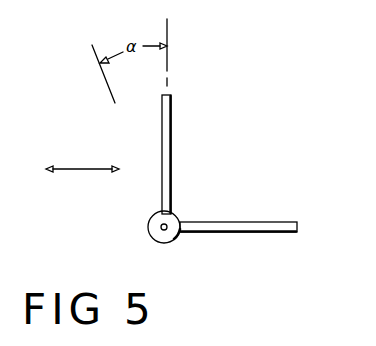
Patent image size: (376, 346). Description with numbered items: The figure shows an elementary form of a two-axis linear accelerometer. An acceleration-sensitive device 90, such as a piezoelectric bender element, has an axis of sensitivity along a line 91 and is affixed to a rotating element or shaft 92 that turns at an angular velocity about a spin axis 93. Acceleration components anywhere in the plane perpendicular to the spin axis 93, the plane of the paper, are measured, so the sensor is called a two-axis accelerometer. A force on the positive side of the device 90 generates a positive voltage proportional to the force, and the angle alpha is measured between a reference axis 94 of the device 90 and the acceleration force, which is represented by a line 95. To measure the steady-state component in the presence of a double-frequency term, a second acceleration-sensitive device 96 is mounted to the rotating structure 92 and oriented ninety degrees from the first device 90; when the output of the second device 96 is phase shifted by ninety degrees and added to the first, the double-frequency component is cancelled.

The acceleration-sensitive device 90 is at (171, 153).
The line 91 is at (80, 168).
The rotating element or shaft 92 is at (149, 216).
The spin axis 93 is at (167, 224).
The reference axis 94 is at (167, 34).
The line 95 is at (104, 80).
The second acceleration-sensitive device 96 is at (255, 222).